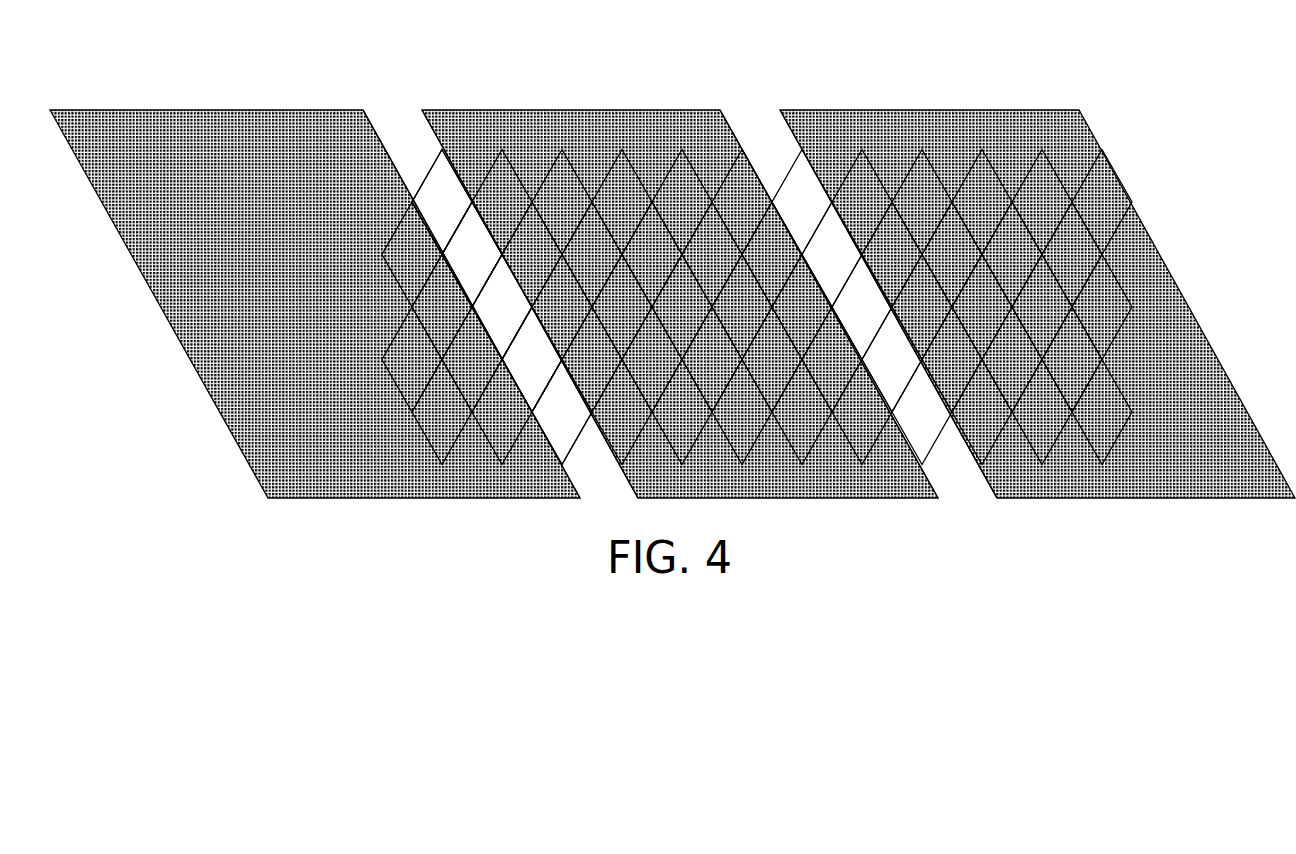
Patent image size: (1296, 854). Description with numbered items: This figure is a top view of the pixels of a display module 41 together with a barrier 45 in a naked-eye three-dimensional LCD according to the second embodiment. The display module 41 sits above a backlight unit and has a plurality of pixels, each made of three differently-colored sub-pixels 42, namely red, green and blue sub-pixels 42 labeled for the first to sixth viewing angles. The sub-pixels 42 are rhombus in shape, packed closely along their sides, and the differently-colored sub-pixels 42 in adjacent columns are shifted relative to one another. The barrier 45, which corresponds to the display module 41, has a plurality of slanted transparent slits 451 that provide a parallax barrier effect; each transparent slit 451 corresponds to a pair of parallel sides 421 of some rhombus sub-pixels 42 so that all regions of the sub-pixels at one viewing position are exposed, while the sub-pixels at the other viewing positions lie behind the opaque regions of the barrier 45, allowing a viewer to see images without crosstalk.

The display module 41 is at (672, 266).
The sub-pixel 42 is at (1106, 160).
The pair of parallel sides 421 is at (464, 196).
The barrier 45 is at (1215, 390).
The transparent slit 451 is at (395, 112).